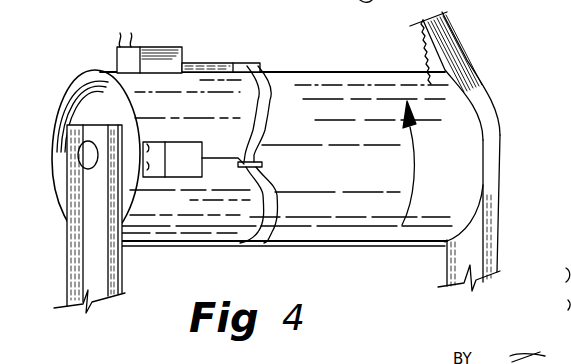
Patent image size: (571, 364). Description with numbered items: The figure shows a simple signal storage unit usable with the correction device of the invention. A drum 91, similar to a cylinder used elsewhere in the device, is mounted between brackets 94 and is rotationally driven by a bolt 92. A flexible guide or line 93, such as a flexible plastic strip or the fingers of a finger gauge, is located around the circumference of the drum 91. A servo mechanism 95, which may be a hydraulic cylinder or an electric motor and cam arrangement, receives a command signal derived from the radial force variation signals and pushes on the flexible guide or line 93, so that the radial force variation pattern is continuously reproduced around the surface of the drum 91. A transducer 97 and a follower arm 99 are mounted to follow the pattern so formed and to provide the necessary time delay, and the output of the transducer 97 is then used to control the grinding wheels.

The drum 91 is at (267, 158).
The bolt 92 is at (452, 45).
The flexible guide or line 93 is at (263, 122).
The brackets 94 is at (490, 260).
The servo mechanism 95 is at (167, 178).
The transducer 97 is at (157, 57).
The follower arm 99 is at (215, 65).